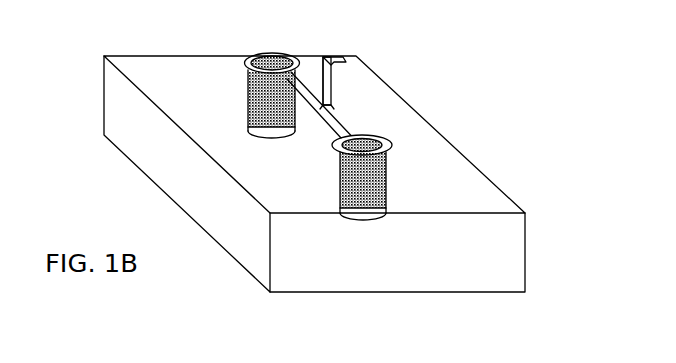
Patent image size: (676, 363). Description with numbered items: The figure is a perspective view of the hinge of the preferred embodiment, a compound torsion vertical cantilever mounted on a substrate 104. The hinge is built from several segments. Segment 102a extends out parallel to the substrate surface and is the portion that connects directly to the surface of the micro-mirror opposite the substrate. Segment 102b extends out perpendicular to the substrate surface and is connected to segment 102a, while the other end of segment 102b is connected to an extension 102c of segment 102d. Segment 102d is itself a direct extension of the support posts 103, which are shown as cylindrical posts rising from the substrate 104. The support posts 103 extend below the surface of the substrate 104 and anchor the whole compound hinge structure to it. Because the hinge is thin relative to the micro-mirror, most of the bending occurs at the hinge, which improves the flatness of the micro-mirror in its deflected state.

The segment 102a is at (350, 58).
The segment 102b is at (332, 82).
The extension 102c is at (331, 106).
The segment 102d is at (323, 83).
The support posts 103 is at (262, 98).
The substrate 104 is at (377, 95).